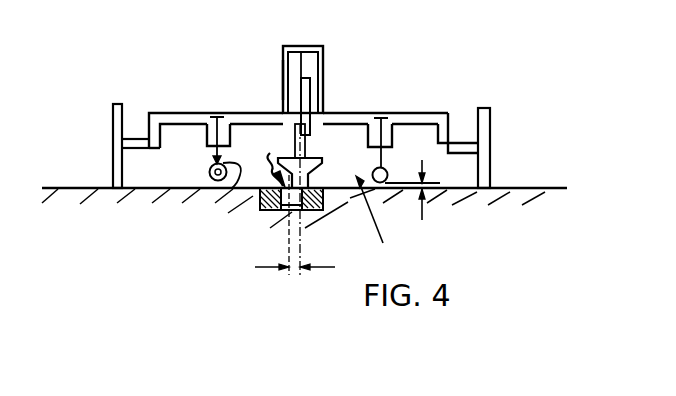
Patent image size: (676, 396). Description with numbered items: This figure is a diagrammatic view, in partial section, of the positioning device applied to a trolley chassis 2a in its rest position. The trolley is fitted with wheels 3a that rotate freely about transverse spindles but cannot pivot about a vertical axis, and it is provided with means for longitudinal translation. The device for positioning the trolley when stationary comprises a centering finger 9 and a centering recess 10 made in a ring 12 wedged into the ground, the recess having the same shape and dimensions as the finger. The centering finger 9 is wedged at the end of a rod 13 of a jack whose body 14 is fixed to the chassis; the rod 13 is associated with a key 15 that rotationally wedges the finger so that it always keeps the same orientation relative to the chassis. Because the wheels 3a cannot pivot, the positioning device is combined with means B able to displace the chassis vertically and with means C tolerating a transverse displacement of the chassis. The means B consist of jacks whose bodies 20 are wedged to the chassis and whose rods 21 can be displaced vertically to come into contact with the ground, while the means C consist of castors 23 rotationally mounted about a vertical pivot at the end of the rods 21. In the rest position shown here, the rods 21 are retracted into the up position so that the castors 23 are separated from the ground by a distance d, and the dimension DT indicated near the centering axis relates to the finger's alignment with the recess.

The rod 13 is at (324, 47).
The jack body 14 is at (283, 70).
The key 15 is at (311, 88).
The means for displacing the chassis vertically B is at (352, 131).
The trolley chassis 2a is at (436, 113).
The wheels 3a is at (489, 120).
The jack bodies 20 is at (188, 127).
The centering recess 10 is at (271, 157).
The centering finger 9 is at (320, 157).
The castors 23 is at (210, 173).
The jack rods 21 is at (213, 190).
The ring 12 is at (266, 213).
The distance d is at (426, 160).
The torch offset DT is at (348, 258).
The means tolerating a transverse displacement of the chassis C is at (376, 219).